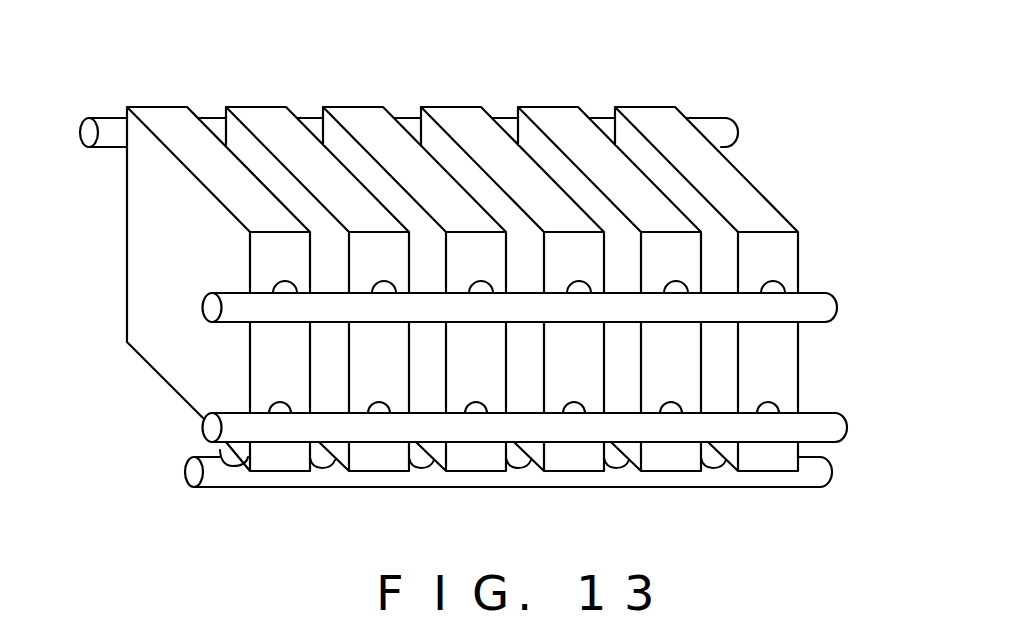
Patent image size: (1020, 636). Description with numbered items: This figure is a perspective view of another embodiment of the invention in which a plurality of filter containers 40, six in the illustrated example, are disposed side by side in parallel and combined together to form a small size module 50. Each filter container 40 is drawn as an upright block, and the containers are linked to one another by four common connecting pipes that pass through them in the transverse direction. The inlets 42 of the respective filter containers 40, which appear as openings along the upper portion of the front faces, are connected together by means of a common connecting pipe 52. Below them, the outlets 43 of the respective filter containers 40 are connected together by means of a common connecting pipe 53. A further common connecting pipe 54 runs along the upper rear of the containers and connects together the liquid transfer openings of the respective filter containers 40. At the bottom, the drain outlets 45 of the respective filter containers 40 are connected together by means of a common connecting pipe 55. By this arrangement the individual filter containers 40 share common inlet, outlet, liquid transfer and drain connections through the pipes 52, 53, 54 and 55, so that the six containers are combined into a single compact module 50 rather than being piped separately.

The filter container 40 is at (460, 118).
The inlet 42 is at (277, 283).
The outlet 43 is at (277, 404).
The drain outlet 45 is at (220, 448).
The module 50 is at (586, 78).
The common connecting pipe 52 is at (824, 303).
The common connecting pipe 53 is at (832, 423).
The common connecting pipe 54 is at (727, 122).
The common connecting pipe 55 is at (820, 470).